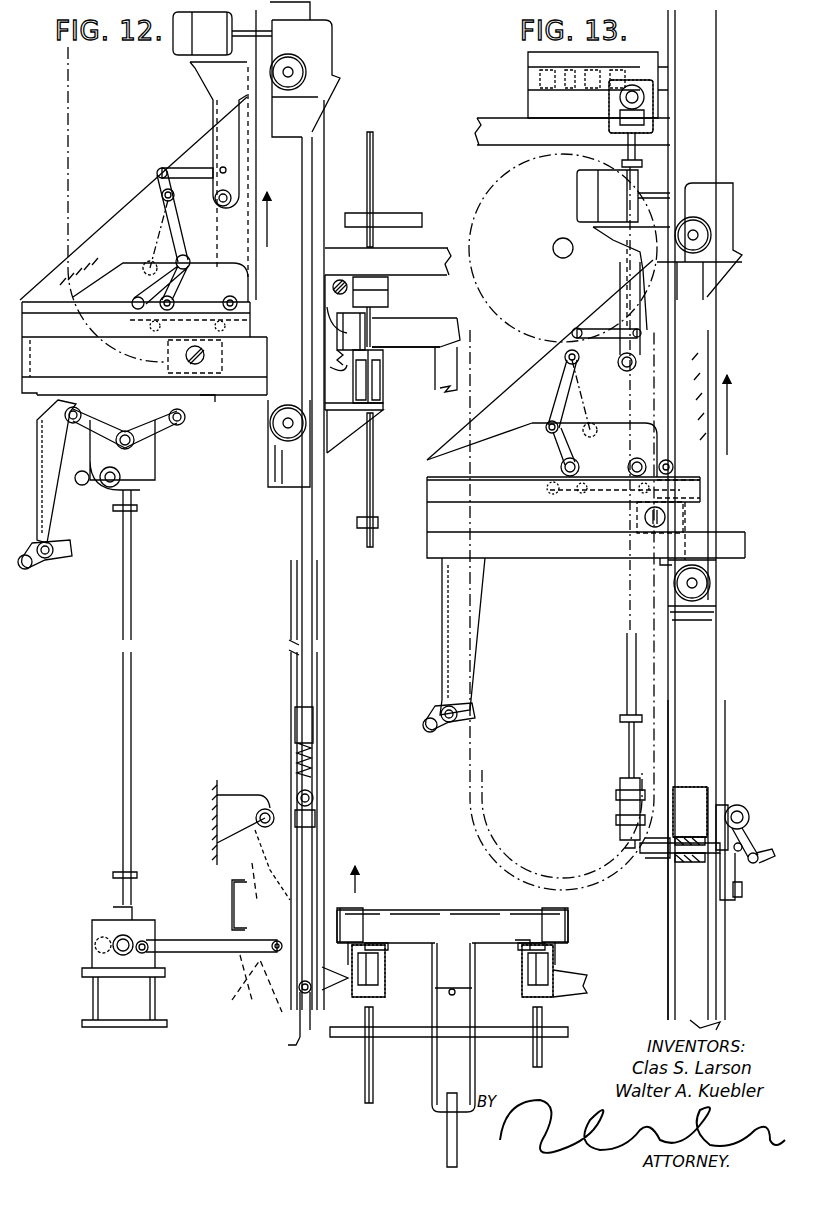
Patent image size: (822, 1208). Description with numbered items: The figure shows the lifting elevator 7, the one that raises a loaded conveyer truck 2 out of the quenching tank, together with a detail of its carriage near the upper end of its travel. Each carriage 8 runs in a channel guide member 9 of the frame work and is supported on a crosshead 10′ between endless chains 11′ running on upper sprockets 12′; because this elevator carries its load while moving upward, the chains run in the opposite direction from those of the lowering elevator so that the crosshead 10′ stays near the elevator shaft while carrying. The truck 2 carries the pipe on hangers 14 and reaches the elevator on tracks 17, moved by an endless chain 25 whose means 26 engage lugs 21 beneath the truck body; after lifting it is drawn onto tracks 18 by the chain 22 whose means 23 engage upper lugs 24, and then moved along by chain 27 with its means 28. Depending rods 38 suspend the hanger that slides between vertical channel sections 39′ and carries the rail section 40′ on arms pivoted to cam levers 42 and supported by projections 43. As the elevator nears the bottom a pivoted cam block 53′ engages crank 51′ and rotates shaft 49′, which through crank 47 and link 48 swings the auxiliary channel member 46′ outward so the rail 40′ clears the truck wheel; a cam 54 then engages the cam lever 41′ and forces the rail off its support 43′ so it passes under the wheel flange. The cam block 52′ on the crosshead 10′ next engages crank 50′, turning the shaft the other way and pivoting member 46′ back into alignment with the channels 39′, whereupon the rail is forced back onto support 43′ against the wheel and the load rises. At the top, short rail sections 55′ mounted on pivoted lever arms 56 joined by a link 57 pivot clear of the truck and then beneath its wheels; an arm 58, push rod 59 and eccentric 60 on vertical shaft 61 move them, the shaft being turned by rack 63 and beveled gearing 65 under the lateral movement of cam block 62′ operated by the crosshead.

In FIG. 12, the conveyer truck 2 is at (447, 925).
In FIG. 12, the elevator 7 is at (244, 489).
In FIG. 13, the elevator 7 is at (736, 311).
In FIG. 12, the carriage 8 is at (136, 198).
In FIG. 13, the carriage 8 is at (694, 461).
In FIG. 12, the channel guide member 9 is at (278, 483).
In FIG. 13, the channel guide member 9 is at (717, 100).
In FIG. 12, the crosshead 10′ is at (208, 357).
In FIG. 13, the crosshead 10′ is at (638, 518).
In FIG. 12, the endless chain 11′ is at (70, 124).
In FIG. 13, the endless chain 11′ is at (472, 338).
In FIG. 13, the upper sprocket 12′ is at (520, 337).
In FIG. 12, the hanger 14 is at (448, 1127).
In FIG. 12, the track 17 is at (363, 983).
In FIG. 12, the track 18 is at (380, 395).
In FIG. 12, the lug 21 is at (523, 942).
In FIG. 12, the endless chain 22 is at (382, 292).
In FIG. 12, the engaging means 23 is at (370, 322).
In FIG. 12, the lug 24 is at (377, 317).
In FIG. 12, the endless chain 25 is at (378, 962).
In FIG. 12, the engaging means 26 is at (372, 947).
In FIG. 12, the endless chain 27 is at (380, 370).
In FIG. 12, the engaging means 28 is at (368, 545).
In FIG. 12, the depending rod 38 is at (308, 567).
In FIG. 12, the vertical channel section 39′ is at (290, 692).
In FIG. 13, the vertical channel section 39′ is at (725, 962).
In FIG. 12, the rail section 40′ is at (349, 942).
In FIG. 12, the cam lever 41′ is at (310, 962).
In FIG. 12, the cam lever 42 is at (300, 1040).
In FIG. 12, the projection 43 is at (583, 988).
In FIG. 12, the support 43′ is at (332, 990).
In FIG. 12, the auxiliary channel member 46′ is at (287, 998).
In FIG. 12, the crank 47 is at (132, 937).
In FIG. 12, the link 48 is at (197, 955).
In FIG. 12, the vertical shaft 49′ is at (128, 673).
In FIG. 12, the crank 50′ is at (167, 433).
In FIG. 12, the crank 51′ is at (77, 423).
In FIG. 12, the cam block 52′ is at (221, 404).
In FIG. 13, the cam block 52′ is at (668, 562).
In FIG. 12, the pivoted cam block 53′ is at (72, 560).
In FIG. 13, the pivoted cam block 53′ is at (473, 712).
In FIG. 12, the cam 54 is at (247, 920).
In FIG. 12, the short rail section 55′ is at (347, 366).
In FIG. 13, the short rail section 55′ is at (740, 893).
In FIG. 13, the pivoted lever arm 56 is at (727, 865).
In FIG. 13, the link 57 is at (758, 863).
In FIG. 13, the arm 58 is at (753, 810).
In FIG. 13, the push rod 59 is at (672, 857).
In FIG. 13, the eccentric 60 is at (635, 860).
In FIG. 13, the vertical shaft 61 is at (638, 140).
In FIG. 12, the cam block 62′ is at (193, 312).
In FIG. 13, the cam block 62′ is at (602, 474).
In FIG. 13, the rack 63 is at (668, 70).
In FIG. 13, the beveled gearing 65 is at (612, 107).